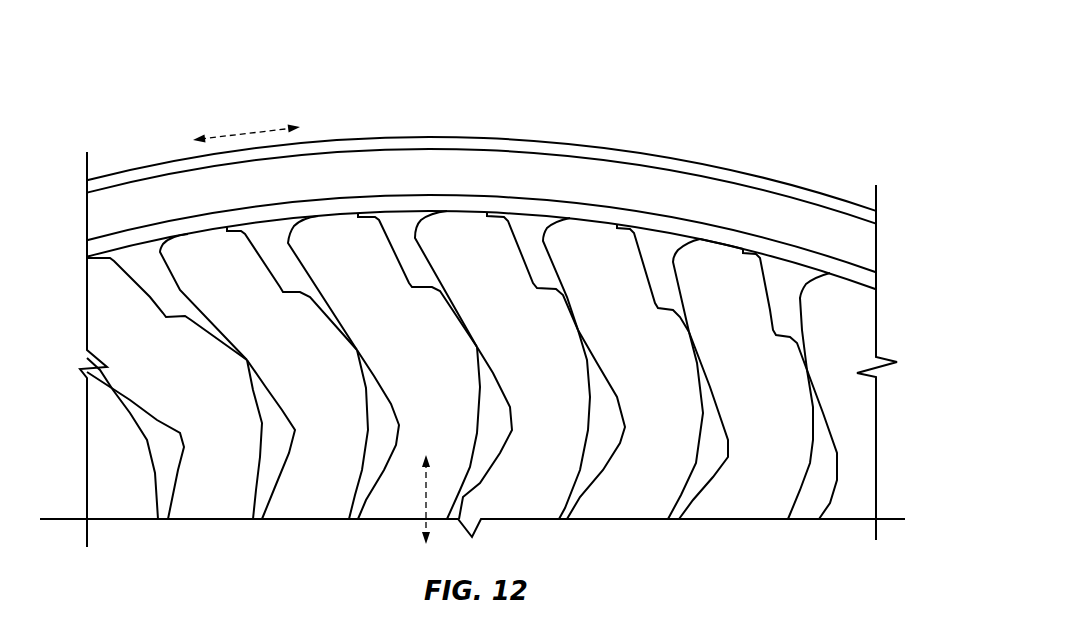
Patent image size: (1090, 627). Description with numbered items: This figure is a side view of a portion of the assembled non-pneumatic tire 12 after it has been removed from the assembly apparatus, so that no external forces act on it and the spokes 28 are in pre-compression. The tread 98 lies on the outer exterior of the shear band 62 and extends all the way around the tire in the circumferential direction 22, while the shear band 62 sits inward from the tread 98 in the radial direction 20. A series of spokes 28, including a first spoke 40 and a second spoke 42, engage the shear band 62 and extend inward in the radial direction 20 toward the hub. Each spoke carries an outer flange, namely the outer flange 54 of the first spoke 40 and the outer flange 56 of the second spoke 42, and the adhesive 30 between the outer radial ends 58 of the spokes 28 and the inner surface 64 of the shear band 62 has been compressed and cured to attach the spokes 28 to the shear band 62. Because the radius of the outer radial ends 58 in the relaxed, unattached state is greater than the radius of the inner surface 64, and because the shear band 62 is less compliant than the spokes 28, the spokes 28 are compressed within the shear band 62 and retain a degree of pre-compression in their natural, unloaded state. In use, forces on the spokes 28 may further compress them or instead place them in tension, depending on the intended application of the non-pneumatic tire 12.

The non-pneumatic tire 12 is at (512, 174).
The radial direction 20 is at (430, 488).
The circumferential direction 22 is at (240, 133).
The spokes 28 is at (469, 311).
The adhesive 30 is at (533, 213).
The first spoke 40 is at (500, 435).
The second spoke 42 is at (607, 450).
The outer flange of the first spoke 54 is at (425, 226).
The outer flange of the second spoke 56 is at (571, 226).
The outer radial ends 58 is at (667, 231).
The shear band 62 is at (865, 247).
The inner surface 64 is at (733, 250).
The tread 98 is at (823, 190).